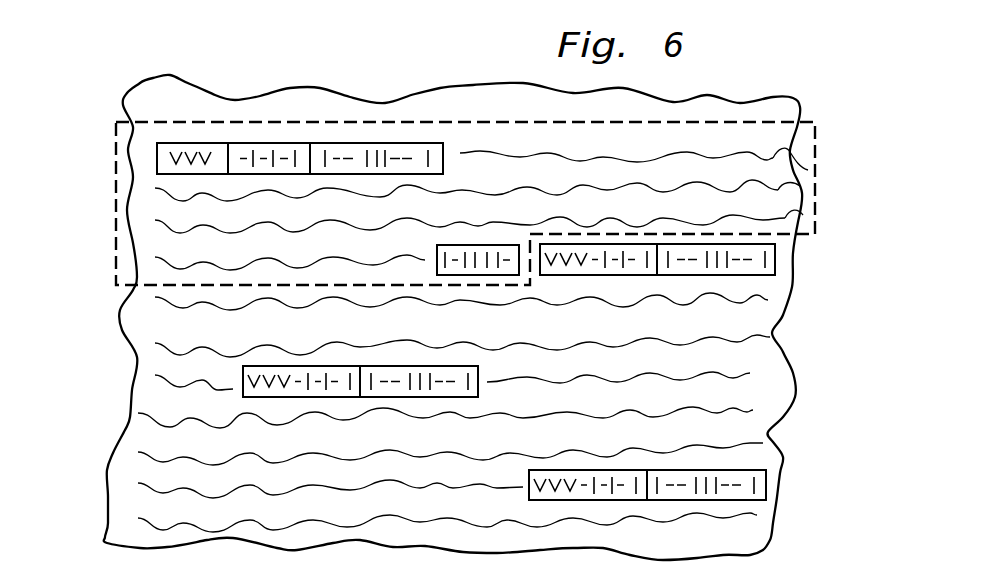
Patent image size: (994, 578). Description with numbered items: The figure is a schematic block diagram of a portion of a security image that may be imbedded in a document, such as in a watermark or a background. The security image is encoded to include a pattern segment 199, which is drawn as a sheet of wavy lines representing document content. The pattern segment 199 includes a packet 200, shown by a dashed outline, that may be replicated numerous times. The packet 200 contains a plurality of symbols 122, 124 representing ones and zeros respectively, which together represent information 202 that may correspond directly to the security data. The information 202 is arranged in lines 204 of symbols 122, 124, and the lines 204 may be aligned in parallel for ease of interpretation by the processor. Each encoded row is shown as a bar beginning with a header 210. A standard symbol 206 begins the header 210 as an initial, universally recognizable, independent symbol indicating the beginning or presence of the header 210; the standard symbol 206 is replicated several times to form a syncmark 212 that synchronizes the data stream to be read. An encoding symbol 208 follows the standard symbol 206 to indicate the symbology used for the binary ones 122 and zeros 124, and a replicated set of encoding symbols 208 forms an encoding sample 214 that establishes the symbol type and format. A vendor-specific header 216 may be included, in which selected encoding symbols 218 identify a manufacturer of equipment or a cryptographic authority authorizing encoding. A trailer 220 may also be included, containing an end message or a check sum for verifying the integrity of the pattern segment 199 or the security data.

The pattern segment 199 is at (100, 470).
The packet 200 is at (108, 198).
The information 202 is at (605, 158).
The lines 204 is at (808, 170).
The standard symbol 206 is at (207, 143).
The encoding symbol 208 is at (282, 153).
The header 210 is at (444, 159).
The syncmark 212 is at (148, 158).
The encoding sample 214 is at (243, 145).
The vendor-specific header 216 is at (404, 143).
The selected encoding symbols 218 is at (387, 151).
The trailer 220 is at (437, 260).
The symbol 122 is at (713, 484).
The symbol 124 is at (723, 487).